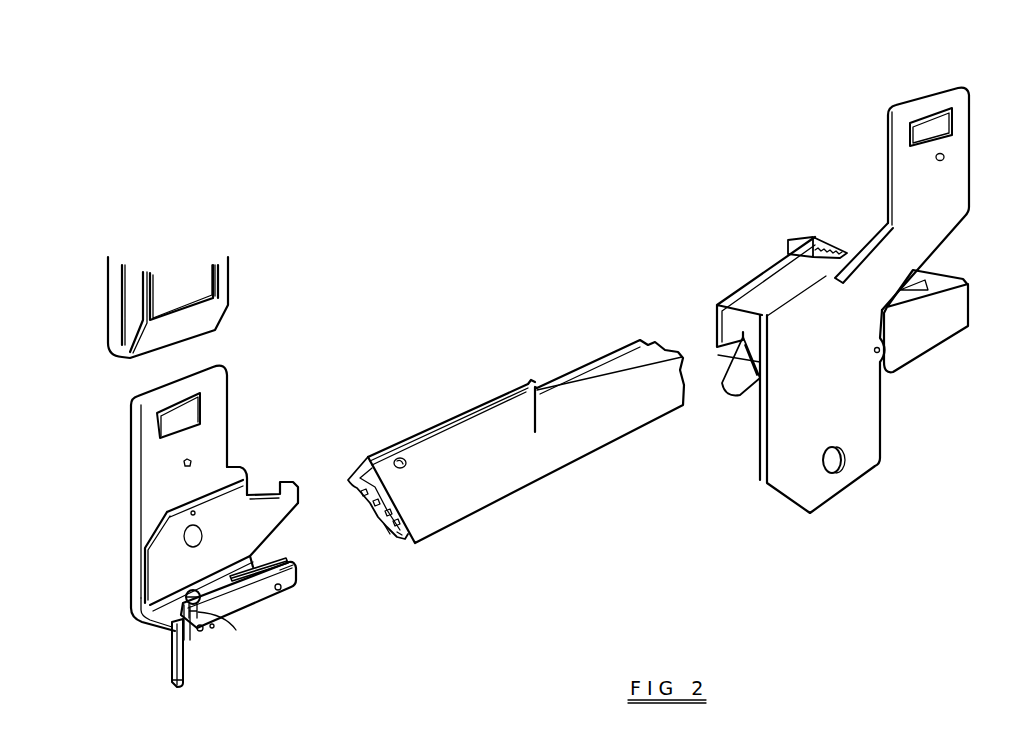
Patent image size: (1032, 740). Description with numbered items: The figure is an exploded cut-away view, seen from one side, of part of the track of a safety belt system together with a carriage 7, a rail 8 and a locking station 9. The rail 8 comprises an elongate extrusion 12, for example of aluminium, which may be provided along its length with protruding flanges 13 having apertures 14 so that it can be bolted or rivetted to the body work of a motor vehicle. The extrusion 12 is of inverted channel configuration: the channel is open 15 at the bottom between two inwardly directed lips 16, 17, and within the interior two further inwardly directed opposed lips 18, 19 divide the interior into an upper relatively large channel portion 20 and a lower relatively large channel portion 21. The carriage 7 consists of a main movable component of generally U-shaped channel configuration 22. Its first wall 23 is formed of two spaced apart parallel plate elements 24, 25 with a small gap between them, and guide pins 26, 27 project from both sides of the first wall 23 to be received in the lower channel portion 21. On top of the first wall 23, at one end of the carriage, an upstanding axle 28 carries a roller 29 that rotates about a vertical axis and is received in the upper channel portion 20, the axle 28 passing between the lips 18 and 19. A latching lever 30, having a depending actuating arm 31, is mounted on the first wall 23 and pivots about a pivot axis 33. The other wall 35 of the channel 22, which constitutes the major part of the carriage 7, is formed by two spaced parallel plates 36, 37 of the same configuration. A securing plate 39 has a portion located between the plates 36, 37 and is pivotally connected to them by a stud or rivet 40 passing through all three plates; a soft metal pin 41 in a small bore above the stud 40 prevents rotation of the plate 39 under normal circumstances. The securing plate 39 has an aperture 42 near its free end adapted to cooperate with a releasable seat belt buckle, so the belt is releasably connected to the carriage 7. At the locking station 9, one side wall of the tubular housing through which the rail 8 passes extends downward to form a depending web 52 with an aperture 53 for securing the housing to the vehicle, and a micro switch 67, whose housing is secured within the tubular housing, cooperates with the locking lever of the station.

The carriage 7 is at (134, 637).
The rail 8 is at (617, 398).
The locking station 9 is at (873, 455).
The extrusion 12 is at (367, 517).
The protruding flange 13 is at (520, 403).
The aperture 14 is at (400, 456).
The open bottom of channel 15 is at (388, 530).
The inwardly directed lip 16 is at (382, 528).
The inwardly directed lip 17 is at (397, 541).
The inwardly directed opposed lip 18 is at (388, 508).
The inwardly directed opposed lip 19 is at (372, 476).
The upper channel portion 20 is at (385, 493).
The lower channel portion 21 is at (396, 521).
The U-shaped channel 22 is at (162, 567).
The first wall 23 is at (255, 603).
The plate element 24 is at (297, 591).
The plate element 25 is at (266, 571).
The guide pin 26 is at (198, 641).
The guide pin 27 is at (286, 579).
The axle 28 is at (216, 628).
The roller 29 is at (194, 594).
The latching lever 30 is at (172, 665).
The actuating arm 31 is at (184, 665).
The pivot axis 33 is at (208, 614).
The other wall 35 is at (244, 463).
The plate 36 is at (298, 510).
The plate 37 is at (264, 492).
The securing plate 39 is at (140, 462).
The stud or rivet 40 is at (188, 538).
The soft metal pin 41 is at (192, 510).
The aperture 42 is at (183, 410).
The depending web 52 is at (877, 407).
The aperture 53 is at (840, 460).
The micro switch 67 is at (950, 323).